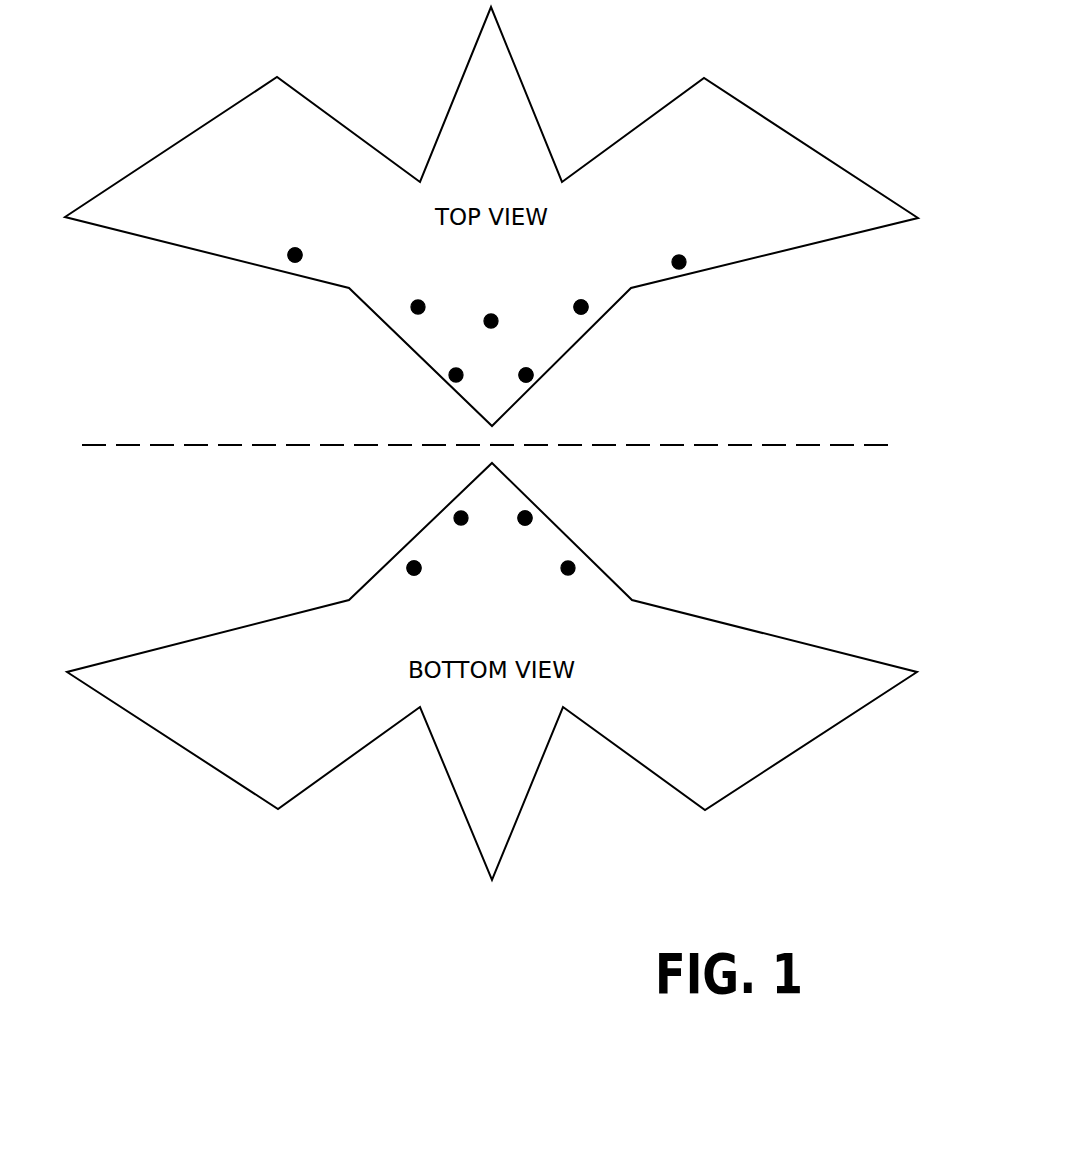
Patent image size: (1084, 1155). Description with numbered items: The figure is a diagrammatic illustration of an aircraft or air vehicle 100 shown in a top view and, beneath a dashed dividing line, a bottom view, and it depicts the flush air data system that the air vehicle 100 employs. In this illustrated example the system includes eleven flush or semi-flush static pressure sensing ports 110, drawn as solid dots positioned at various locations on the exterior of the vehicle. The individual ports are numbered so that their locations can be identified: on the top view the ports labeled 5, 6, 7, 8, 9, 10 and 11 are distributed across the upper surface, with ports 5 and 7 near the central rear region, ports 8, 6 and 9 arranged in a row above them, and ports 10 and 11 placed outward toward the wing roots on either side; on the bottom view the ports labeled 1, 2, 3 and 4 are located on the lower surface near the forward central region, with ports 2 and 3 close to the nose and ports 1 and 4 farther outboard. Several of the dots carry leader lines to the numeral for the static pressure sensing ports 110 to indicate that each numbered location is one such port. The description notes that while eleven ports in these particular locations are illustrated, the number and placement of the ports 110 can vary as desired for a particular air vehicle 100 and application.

The air vehicle 100 is at (758, 112).
The static pressure sensing ports 110 is at (295, 255).
The attachment point position 1 is at (415, 587).
The attachment point position 2 is at (459, 535).
The attachment point position 3 is at (525, 535).
The attachment point position 4 is at (568, 587).
The attachment point position 5 is at (456, 362).
The attachment point position 6 is at (491, 302).
The attachment point position 7 is at (526, 362).
The attachment point position 8 is at (418, 293).
The attachment point position 9 is at (580, 294).
The attachment point position 10 is at (679, 249).
The attachment point position 11 is at (296, 240).